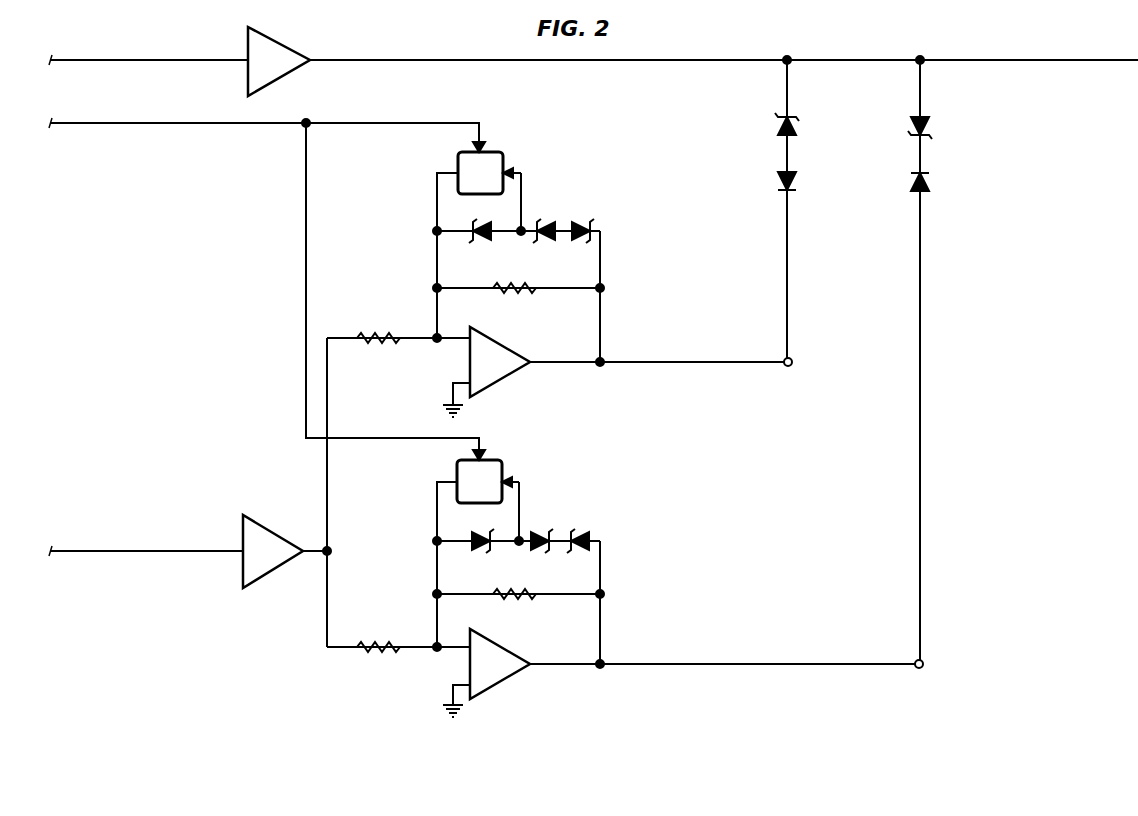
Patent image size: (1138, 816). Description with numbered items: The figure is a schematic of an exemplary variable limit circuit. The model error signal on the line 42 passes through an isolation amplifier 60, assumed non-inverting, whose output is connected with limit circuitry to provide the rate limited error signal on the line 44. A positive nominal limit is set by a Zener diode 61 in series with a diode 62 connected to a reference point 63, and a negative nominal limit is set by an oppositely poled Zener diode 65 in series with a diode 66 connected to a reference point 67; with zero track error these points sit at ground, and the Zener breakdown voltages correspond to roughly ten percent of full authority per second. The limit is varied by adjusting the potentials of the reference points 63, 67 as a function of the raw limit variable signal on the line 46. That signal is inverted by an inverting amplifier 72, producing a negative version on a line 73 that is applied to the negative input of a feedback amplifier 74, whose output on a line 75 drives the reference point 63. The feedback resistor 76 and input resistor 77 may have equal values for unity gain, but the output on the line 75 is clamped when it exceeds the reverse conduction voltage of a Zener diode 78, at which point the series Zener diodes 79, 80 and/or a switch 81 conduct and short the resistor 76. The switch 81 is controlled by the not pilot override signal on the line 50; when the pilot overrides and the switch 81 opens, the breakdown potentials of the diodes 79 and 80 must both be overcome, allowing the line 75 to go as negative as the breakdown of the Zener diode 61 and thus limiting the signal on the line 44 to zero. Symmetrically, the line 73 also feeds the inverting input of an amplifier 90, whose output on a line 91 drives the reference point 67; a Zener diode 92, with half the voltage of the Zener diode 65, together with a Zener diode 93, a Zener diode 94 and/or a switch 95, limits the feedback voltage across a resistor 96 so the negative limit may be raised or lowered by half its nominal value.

The line 42 is at (117, 63).
The isolation amplifier 60 is at (282, 52).
The line 44 is at (627, 64).
The line 50 is at (117, 126).
The line 73 is at (323, 482).
The switch 81 is at (495, 152).
The Zener diode 80 is at (472, 245).
The Zener diode 79 is at (534, 245).
The Zener diode 78 is at (584, 245).
The feedback resistor 76 is at (507, 297).
The input resistor 77 is at (377, 337).
The feedback amplifier 74 is at (509, 357).
The line 75 is at (578, 370).
The reference point 63 is at (792, 366).
The Zener diode 61 is at (796, 127).
The diode 62 is at (796, 182).
The Zener diode 65 is at (929, 128).
The diode 66 is at (929, 182).
The reference point 67 is at (923, 668).
The switch 95 is at (494, 460).
The line 46 is at (101, 556).
The inverting amplifier 72 is at (268, 538).
The Zener diode 94 is at (472, 555).
The Zener diode 93 is at (533, 555).
The Zener diode 92 is at (583, 555).
The resistor 96 is at (507, 603).
The amplifier 90 is at (509, 659).
The line 91 is at (800, 672).